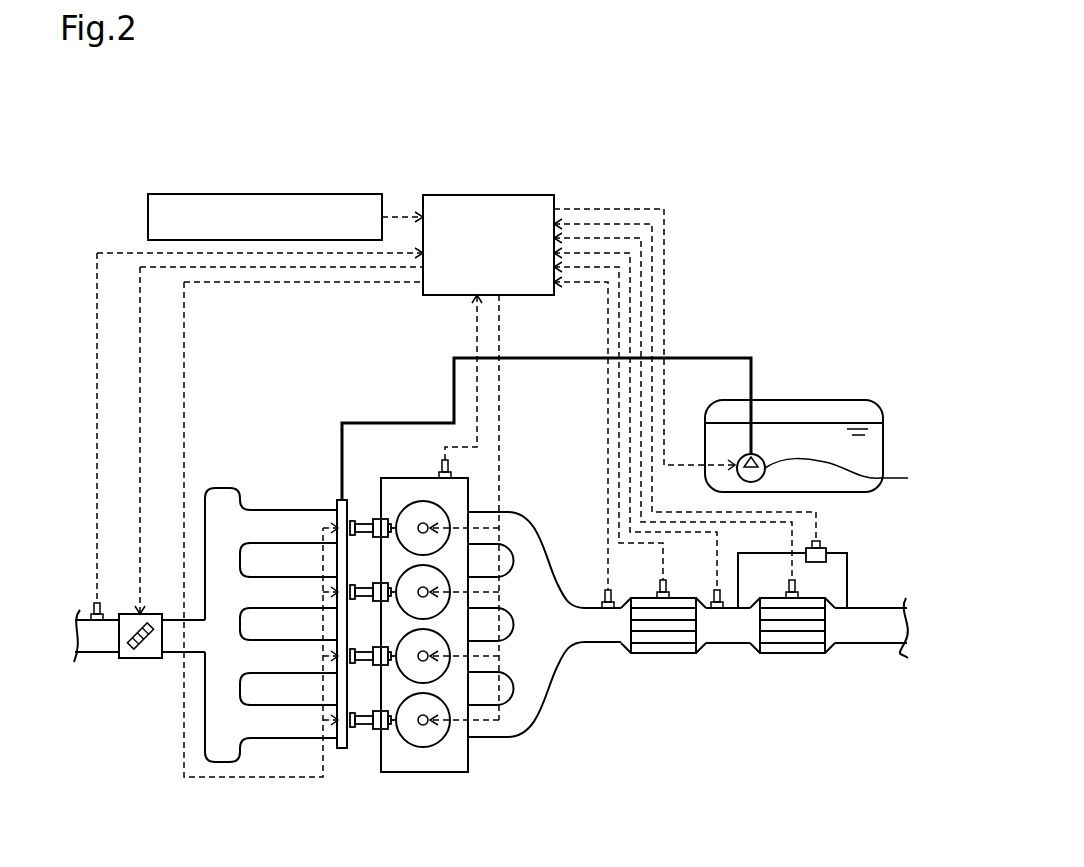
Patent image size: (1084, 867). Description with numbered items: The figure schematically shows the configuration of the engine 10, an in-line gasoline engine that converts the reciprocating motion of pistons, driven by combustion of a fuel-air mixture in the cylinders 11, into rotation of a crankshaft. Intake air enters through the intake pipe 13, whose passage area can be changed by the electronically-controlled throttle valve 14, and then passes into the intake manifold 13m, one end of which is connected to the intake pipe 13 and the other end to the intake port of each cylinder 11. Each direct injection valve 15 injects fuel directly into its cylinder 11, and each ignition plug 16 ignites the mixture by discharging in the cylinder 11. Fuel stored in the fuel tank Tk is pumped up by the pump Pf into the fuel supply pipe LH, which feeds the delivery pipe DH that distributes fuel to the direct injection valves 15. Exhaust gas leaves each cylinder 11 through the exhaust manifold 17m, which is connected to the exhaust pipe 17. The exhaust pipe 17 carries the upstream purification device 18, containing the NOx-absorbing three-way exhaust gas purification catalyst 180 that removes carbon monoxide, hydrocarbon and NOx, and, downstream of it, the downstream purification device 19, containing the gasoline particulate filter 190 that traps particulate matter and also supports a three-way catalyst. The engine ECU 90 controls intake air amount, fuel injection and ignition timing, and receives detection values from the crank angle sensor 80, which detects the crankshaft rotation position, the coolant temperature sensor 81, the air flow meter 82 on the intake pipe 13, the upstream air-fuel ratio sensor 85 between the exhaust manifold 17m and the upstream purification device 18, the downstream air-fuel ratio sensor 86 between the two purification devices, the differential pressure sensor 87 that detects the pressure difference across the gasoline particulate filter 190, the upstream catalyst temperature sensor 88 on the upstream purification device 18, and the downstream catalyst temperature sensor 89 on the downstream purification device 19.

The engine 10 is at (588, 761).
The cylinder 11 is at (428, 669).
The intake pipe 13 is at (101, 654).
The intake manifold 13m is at (215, 745).
The throttle valve 14 is at (146, 659).
The direct injection valve 15 is at (368, 733).
The ignition plug 16 is at (425, 524).
The exhaust pipe 17 is at (870, 608).
The exhaust manifold 17m is at (553, 678).
The upstream purification device 18 is at (690, 656).
The exhaust gas purification catalyst 180 is at (664, 654).
The downstream purification device 19 is at (819, 656).
The gasoline particulate filter 190 is at (794, 654).
The crank angle sensor 80 is at (148, 217).
The coolant temperature sensor 81 is at (440, 465).
The air flow meter 82 is at (112, 566).
The upstream air-fuel ratio sensor 85 is at (603, 590).
The downstream air-fuel ratio sensor 86 is at (713, 592).
The differential pressure sensor 87 is at (826, 549).
The upstream catalyst temperature sensor 88 is at (658, 592).
The downstream catalyst temperature sensor 89 is at (788, 594).
The engine electronic control unit 90 is at (491, 195).
The fuel supply pipe LH is at (342, 436).
The delivery pipe DH is at (336, 521).
The fuel tank Tk is at (847, 400).
The pump Pf is at (838, 473).